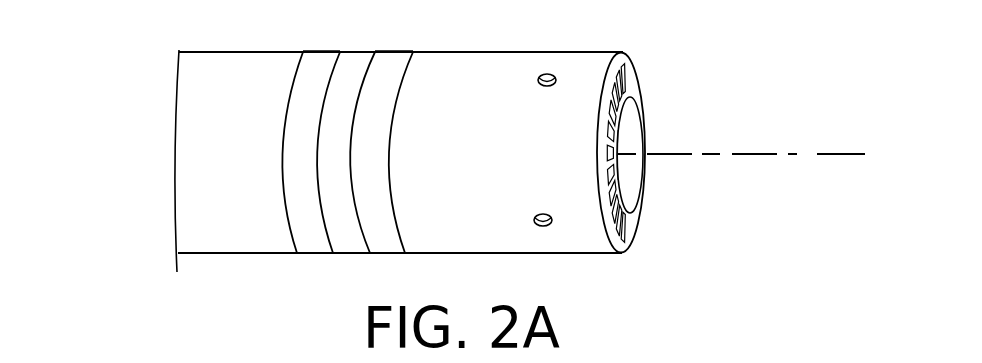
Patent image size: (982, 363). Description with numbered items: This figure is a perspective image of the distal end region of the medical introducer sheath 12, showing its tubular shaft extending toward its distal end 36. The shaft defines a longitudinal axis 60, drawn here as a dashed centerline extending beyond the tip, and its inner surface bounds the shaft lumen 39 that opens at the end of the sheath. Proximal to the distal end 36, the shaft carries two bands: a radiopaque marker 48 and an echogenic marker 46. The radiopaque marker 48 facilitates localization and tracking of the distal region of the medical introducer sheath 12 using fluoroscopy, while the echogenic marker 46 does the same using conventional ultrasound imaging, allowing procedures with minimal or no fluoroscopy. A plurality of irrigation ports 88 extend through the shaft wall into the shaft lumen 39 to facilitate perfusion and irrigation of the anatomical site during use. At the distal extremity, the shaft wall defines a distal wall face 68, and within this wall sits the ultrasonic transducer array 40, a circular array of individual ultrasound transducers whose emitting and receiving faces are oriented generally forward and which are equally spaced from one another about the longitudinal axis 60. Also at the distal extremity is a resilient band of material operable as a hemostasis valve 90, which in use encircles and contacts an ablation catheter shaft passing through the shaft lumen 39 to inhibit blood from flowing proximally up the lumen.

The medical introducer sheath 12 is at (106, 209).
The distal end 36 is at (210, 52).
The radiopaque marker 48 is at (338, 51).
The echogenic marker 46 is at (410, 51).
The irrigation ports 88 is at (552, 76).
The ultrasonic transducer array 40 is at (644, 76).
The hemostasis valve 90 is at (619, 142).
The shaft lumen 39 is at (642, 186).
The distal wall face 68 is at (628, 250).
The longitudinal axis 60 is at (795, 154).